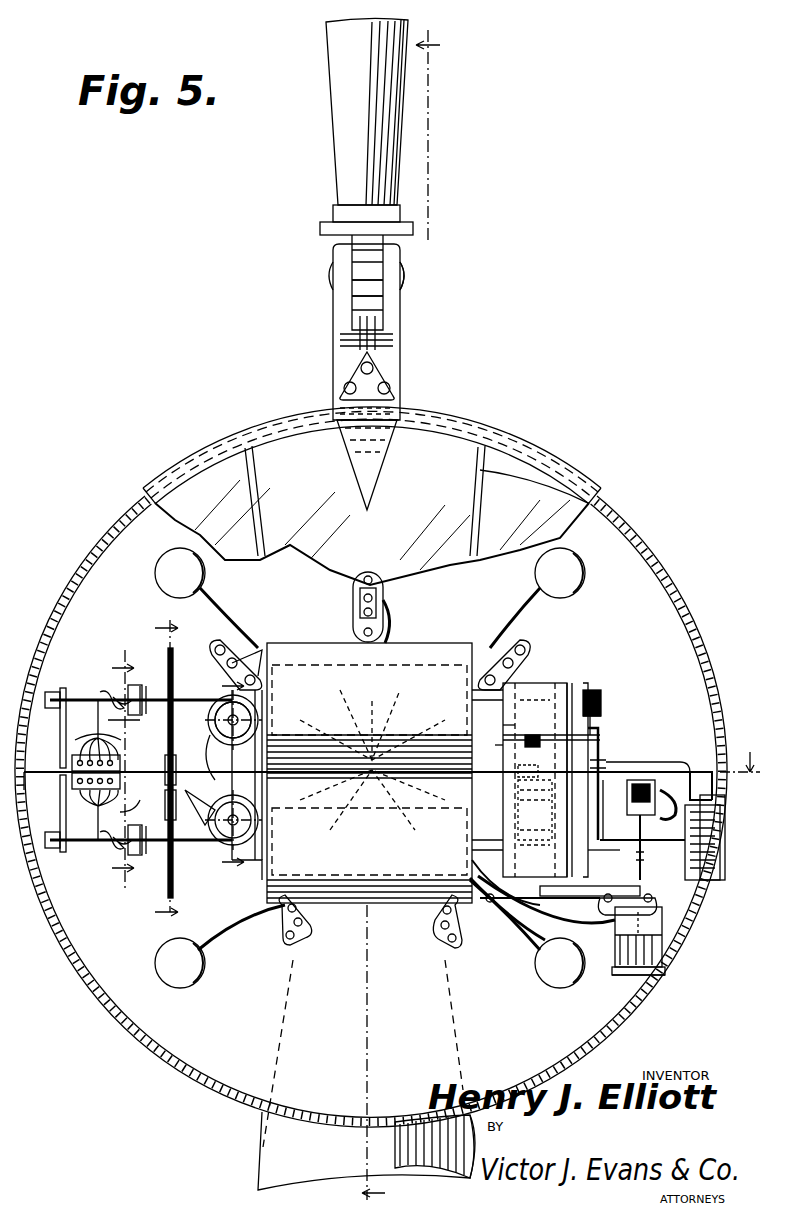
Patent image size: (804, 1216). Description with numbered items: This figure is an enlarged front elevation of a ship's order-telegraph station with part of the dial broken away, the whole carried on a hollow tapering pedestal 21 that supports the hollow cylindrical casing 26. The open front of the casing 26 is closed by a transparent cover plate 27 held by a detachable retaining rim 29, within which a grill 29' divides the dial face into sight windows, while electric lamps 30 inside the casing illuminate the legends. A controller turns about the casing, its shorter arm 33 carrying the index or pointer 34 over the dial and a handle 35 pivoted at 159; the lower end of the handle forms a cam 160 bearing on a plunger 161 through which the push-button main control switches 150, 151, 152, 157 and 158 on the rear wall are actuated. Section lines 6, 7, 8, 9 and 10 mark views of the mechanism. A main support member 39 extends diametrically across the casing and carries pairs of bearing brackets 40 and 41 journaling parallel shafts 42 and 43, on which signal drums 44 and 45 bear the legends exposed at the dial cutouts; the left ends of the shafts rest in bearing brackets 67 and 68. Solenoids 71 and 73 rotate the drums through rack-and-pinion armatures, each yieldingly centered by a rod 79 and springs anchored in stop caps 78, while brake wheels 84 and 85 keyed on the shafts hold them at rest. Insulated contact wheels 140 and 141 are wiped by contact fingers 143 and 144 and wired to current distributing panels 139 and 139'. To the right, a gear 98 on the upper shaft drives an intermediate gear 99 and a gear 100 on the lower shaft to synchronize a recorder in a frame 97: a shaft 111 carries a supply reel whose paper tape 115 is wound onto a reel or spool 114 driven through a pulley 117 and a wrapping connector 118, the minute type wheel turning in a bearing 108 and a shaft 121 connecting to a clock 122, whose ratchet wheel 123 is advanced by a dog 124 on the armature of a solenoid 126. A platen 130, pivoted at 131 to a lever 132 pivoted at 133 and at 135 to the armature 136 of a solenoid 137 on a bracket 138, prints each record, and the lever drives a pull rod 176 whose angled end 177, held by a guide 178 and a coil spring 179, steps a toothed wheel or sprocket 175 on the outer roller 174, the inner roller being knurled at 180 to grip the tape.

The section line 6- 6 is at (397, 617).
The section line 7- 7 is at (233, 774).
The section line 8- 8 is at (740, 755).
The section line 9- 9 is at (159, 771).
The section line 10- 10 is at (121, 769).
The pedestal 21 is at (262, 1142).
The hollow cylindrical casing 26 is at (690, 624).
The transparent cover plate 27 is at (458, 450).
The retaining rim 29 is at (372, 455).
The grill 29' is at (534, 464).
The electric lamps 30 is at (155, 578).
The shorter arm 33 is at (400, 350).
The index or pointer 34 is at (348, 428).
The handle 35 is at (331, 112).
The main support member 39 is at (686, 770).
The bearing brackets 40 is at (498, 745).
The bearing brackets 41 is at (255, 860).
The upper shaft 42 is at (196, 700).
The lower shaft 43 is at (90, 848).
The signal drum 44 is at (322, 645).
The signal drum 45 is at (200, 845).
The bearing bracket 67 is at (60, 724).
The bearing bracket 68 is at (60, 800).
The solenoids 71 is at (208, 720).
The solenoids 73 is at (210, 806).
The stop caps 78 is at (216, 728).
The rod 79 is at (210, 742).
The brake wheel 84 is at (167, 672).
The brake wheel 85 is at (167, 872).
The frame 97 is at (600, 690).
The gear 98 is at (514, 712).
The intermediate gear 99 is at (524, 762).
The gear 100 is at (506, 880).
The bearing 108 is at (607, 855).
The shaft 111 is at (601, 705).
The reel or spool 114 is at (570, 680).
The paper tape 115 is at (532, 690).
The pulley 117 is at (601, 695).
The wrapping connector 118 is at (606, 719).
The shaft 121 is at (642, 847).
The clock 122 is at (685, 866).
The ratchet wheel 123 is at (656, 855).
The dog 124 is at (660, 820).
The solenoid 126 is at (627, 794).
The platen 130 is at (508, 912).
The pivot 131 is at (545, 918).
The lever 132 is at (565, 896).
The pivot 133 is at (600, 898).
The pivot 135 is at (650, 898).
The armature 136 is at (662, 935).
The solenoid 137 is at (668, 950).
The bracket 138 is at (668, 975).
The current distributing panel 139 is at (93, 747).
The current distributing panel 139' is at (92, 795).
The insulated contact wheel 140 is at (144, 694).
The insulated contact wheel 141 is at (145, 847).
The spring contact finger 143 is at (140, 728).
The contact finger 144 is at (140, 810).
The main control switch 150 is at (355, 606).
The main control switch 151 is at (222, 648).
The main control switch 152 is at (526, 652).
The main control switch 157 is at (282, 930).
The main control switch 158 is at (462, 940).
The pivot 159 is at (406, 282).
The cam 160 is at (352, 296).
The plunger 161 is at (383, 326).
The outer roller 174 is at (538, 735).
The toothed wheel or sprocket 175 is at (594, 736).
The pull rod 176 is at (613, 810).
The angled end 177 is at (600, 754).
The guide 178 is at (615, 761).
The coil spring 179 is at (648, 757).
The knurled portion 180 is at (540, 794).